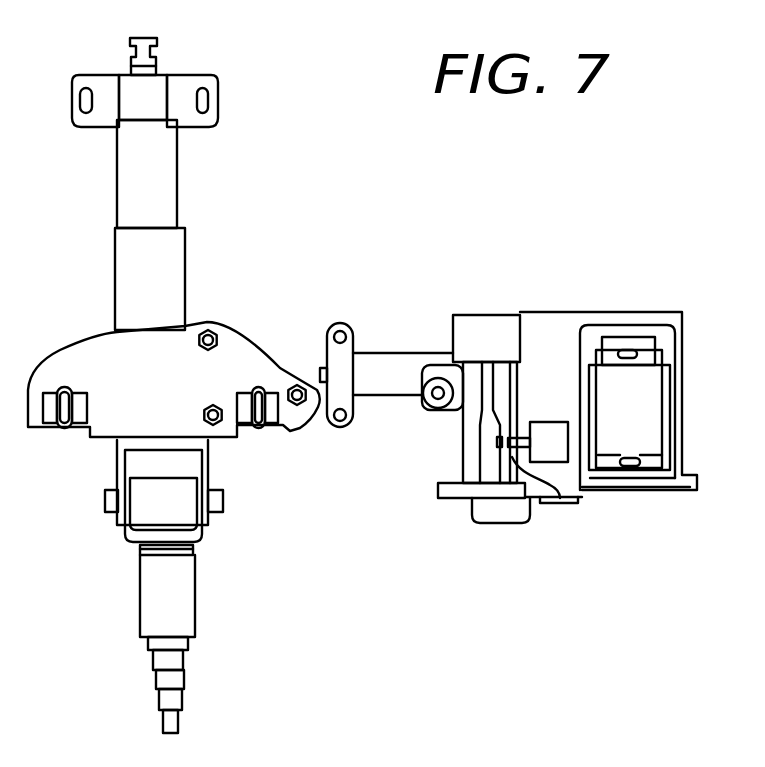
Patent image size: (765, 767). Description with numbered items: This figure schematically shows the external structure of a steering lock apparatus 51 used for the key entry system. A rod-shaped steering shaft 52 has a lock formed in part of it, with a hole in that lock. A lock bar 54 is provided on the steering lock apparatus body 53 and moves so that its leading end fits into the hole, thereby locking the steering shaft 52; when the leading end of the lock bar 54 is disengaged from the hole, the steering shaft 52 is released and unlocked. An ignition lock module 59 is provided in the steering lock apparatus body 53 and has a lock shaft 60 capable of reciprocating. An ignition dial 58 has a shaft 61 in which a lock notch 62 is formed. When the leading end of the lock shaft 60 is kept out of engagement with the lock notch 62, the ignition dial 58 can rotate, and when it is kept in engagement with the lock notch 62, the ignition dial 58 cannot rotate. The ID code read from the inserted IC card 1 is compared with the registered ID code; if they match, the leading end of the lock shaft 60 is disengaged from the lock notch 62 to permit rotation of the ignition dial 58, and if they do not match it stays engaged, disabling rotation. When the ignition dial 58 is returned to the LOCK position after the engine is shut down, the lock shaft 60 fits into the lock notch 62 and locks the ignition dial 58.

The IC card 1 is at (640, 340).
The steering lock apparatus 51 is at (262, 90).
The steering shaft 52 is at (183, 660).
The steering lock apparatus body 53 is at (527, 312).
The lock bar 54 is at (323, 370).
The ignition dial 58 is at (492, 525).
The ignition lock module 59 is at (547, 422).
The lock shaft 60 is at (561, 504).
The shaft of the ignition dial 61 is at (483, 433).
The lock notch 62 is at (497, 443).